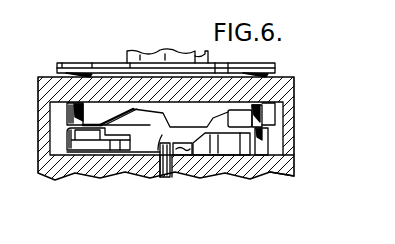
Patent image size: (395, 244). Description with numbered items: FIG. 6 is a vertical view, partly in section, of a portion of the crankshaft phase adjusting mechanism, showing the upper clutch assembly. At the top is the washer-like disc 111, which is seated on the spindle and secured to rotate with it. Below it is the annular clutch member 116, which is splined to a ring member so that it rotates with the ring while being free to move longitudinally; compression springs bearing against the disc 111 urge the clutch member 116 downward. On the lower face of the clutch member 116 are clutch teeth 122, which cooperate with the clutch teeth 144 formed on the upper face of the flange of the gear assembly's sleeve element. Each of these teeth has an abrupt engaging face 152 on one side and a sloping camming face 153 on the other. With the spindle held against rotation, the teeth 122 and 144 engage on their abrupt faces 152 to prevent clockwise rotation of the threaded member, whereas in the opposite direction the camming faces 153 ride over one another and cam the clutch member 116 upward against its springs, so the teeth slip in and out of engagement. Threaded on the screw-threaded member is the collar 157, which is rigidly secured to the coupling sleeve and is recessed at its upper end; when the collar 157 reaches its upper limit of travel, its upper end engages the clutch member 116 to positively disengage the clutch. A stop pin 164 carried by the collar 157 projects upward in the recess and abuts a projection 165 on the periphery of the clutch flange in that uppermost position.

The disc 111 is at (275, 69).
The clutch member 116 is at (297, 89).
The clutch teeth 122 is at (270, 119).
The clutch teeth 144 is at (160, 133).
The abrupt engaging face 152 is at (93, 145).
The camming face 153 is at (133, 109).
The collar 157 is at (290, 178).
The stop pin 164 is at (165, 178).
The projection 165 is at (215, 180).